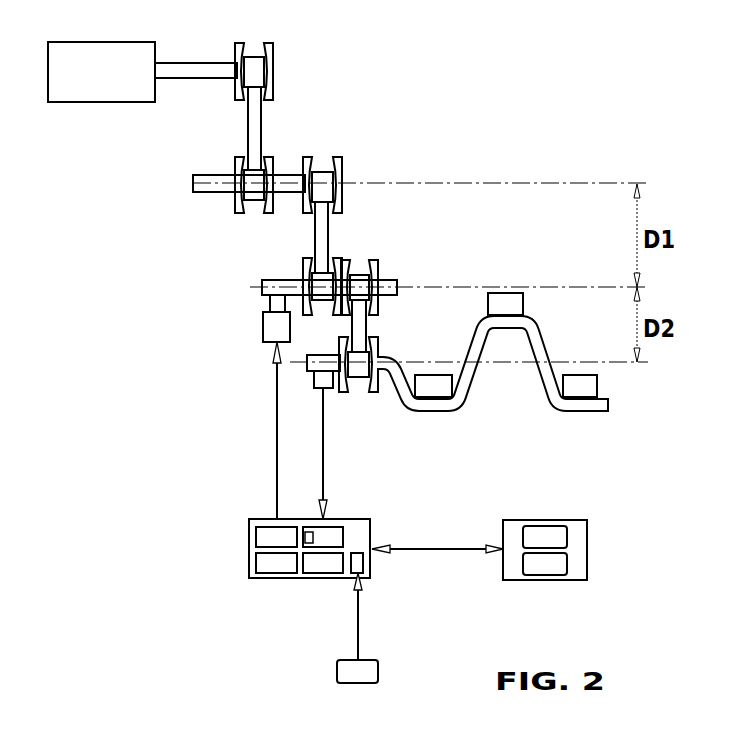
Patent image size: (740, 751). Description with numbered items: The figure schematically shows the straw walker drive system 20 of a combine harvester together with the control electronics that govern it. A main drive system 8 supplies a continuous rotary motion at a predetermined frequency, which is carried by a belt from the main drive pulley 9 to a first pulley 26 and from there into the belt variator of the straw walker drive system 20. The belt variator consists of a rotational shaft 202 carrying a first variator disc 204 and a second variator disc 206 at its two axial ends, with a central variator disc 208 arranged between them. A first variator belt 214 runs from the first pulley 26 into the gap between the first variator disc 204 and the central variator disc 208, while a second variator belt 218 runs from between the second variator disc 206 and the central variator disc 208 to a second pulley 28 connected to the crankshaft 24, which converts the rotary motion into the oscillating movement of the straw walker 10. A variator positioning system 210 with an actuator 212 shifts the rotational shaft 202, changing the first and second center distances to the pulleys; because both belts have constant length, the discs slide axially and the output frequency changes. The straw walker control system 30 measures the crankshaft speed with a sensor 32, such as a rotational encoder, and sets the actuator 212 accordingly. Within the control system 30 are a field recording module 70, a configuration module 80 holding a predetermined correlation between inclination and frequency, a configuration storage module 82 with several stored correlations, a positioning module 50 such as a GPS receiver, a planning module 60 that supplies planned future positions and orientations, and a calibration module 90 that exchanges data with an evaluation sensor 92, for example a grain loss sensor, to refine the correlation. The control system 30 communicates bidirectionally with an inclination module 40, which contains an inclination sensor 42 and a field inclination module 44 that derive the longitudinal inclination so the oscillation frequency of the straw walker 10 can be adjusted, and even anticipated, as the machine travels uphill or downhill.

The main drive system 8 is at (130, 52).
The main drive pulley 9 is at (275, 53).
The straw walker drive system 20 is at (196, 243).
The first pulley 26 is at (342, 172).
The first variator belt 214 is at (322, 238).
The first variator disc 204 is at (303, 268).
The central variator disc 208 is at (348, 264).
The rotational shaft 202 is at (398, 286).
The second variator disc 206 is at (378, 304).
The second variator belt 218 is at (372, 326).
The variator positioning system 210 is at (255, 352).
The actuator 212 is at (263, 329).
The sensor 32 is at (312, 378).
The second pulley 28 is at (333, 384).
The crankshaft 24 is at (452, 392).
The straw walker 10 is at (528, 305).
The straw walker control system 30 is at (299, 565).
The field recording module 70 is at (252, 536).
The configuration module 80 is at (337, 520).
The configuration storage module 82 is at (292, 526).
The positioning module 50 is at (272, 576).
The planning module 60 is at (317, 578).
The calibration module 90 is at (372, 580).
The evaluation sensor 92 is at (380, 670).
The inclination module 40 is at (581, 549).
The inclination sensor 42 is at (548, 526).
The field inclination module 44 is at (551, 582).